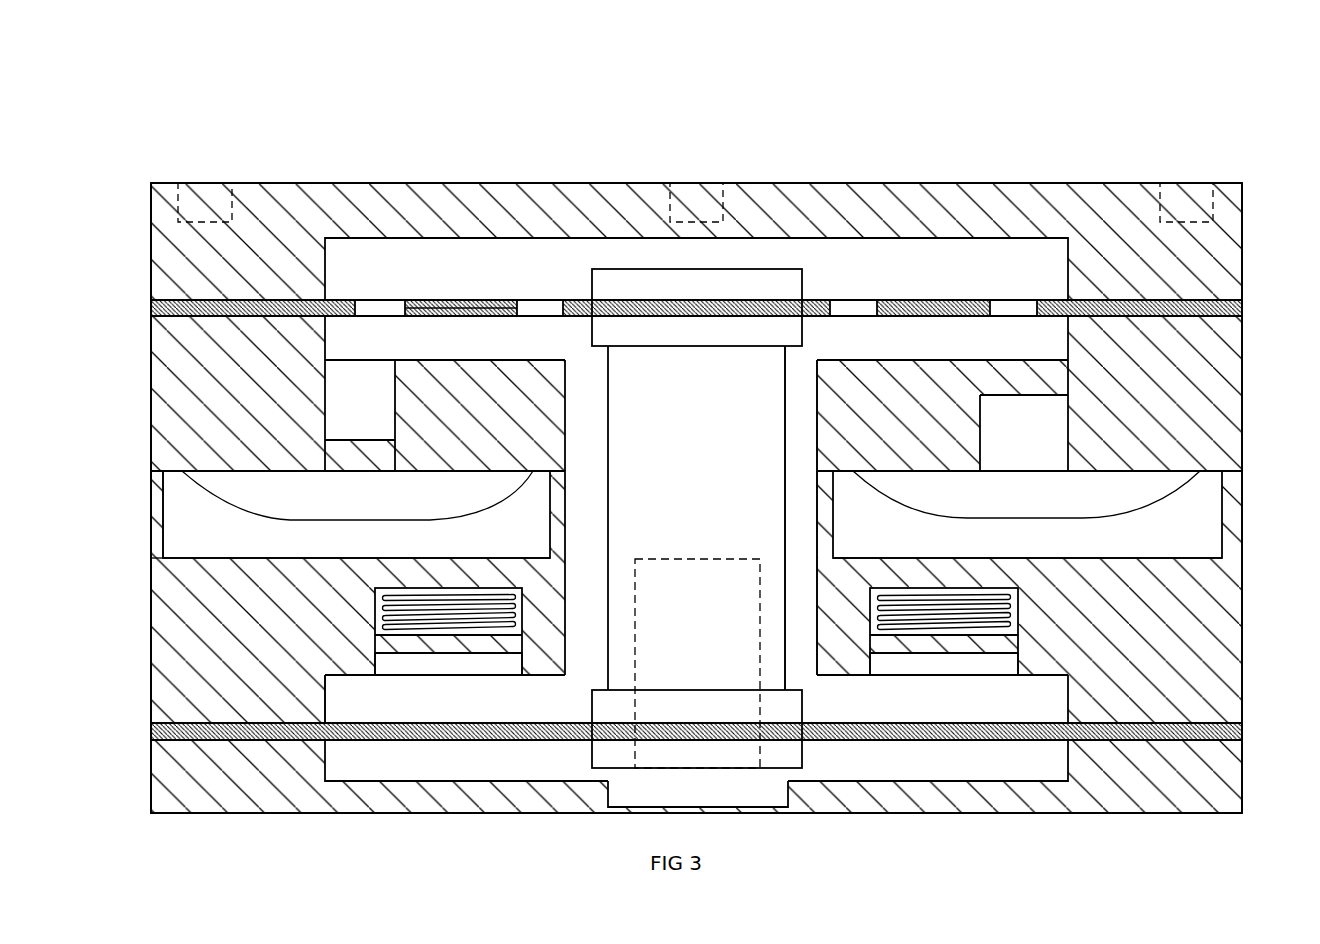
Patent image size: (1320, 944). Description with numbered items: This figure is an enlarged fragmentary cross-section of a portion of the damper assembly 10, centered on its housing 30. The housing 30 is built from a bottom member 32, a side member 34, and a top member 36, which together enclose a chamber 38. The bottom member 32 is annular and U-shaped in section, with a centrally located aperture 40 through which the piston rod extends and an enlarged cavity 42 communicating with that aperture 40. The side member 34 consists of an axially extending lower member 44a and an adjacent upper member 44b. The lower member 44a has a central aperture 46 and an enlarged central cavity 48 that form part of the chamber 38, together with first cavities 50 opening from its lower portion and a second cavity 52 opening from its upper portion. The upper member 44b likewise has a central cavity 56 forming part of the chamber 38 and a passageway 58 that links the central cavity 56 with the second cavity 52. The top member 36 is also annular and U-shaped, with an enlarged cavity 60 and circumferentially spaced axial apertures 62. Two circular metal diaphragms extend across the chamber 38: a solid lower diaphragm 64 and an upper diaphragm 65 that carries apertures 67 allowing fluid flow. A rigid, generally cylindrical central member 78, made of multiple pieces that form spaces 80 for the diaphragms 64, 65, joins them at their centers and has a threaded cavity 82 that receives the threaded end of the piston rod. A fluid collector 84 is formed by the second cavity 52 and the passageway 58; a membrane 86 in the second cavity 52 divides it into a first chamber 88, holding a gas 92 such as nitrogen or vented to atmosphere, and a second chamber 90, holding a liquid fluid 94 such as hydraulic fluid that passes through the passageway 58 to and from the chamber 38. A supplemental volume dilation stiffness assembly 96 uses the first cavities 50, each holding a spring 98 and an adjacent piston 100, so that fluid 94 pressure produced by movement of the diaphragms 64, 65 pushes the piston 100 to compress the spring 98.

The damper assembly 10 is at (268, 125).
The housing 30 is at (1250, 250).
The bottom member 32 is at (1205, 788).
The side member 34 is at (1200, 563).
The top member 36 is at (1223, 287).
The chamber 38 is at (1050, 330).
The aperture 40 is at (788, 793).
The enlarged cavity 42 is at (325, 749).
The lower member 44a is at (1205, 593).
The upper member 44b is at (1205, 378).
The aperture 46 is at (580, 667).
The central cavity 48 is at (325, 704).
The first cavities 50 is at (375, 663).
The second cavity 52 is at (163, 533).
The central cavity 56 is at (325, 338).
The passageway 58 is at (318, 409).
The enlarged cavity 60 is at (325, 258).
The apertures 62 is at (230, 195).
The lower diaphragm 64 is at (817, 428).
The upper diaphragm 65 is at (440, 308).
The apertures 67 is at (360, 303).
The central member 78 is at (788, 672).
The spaces 80 is at (722, 298).
The threaded cavity 82 is at (640, 753).
The fluid collector 84 is at (160, 495).
The membrane 86 is at (250, 515).
The first chamber 88 is at (1140, 510).
The second chamber 90 is at (228, 492).
The gas 92 is at (1125, 532).
The fluid 94 is at (1133, 480).
The supplemental volume dilation stiffness assembly 96 is at (1028, 610).
The spring 98 is at (375, 619).
The piston 100 is at (420, 647).